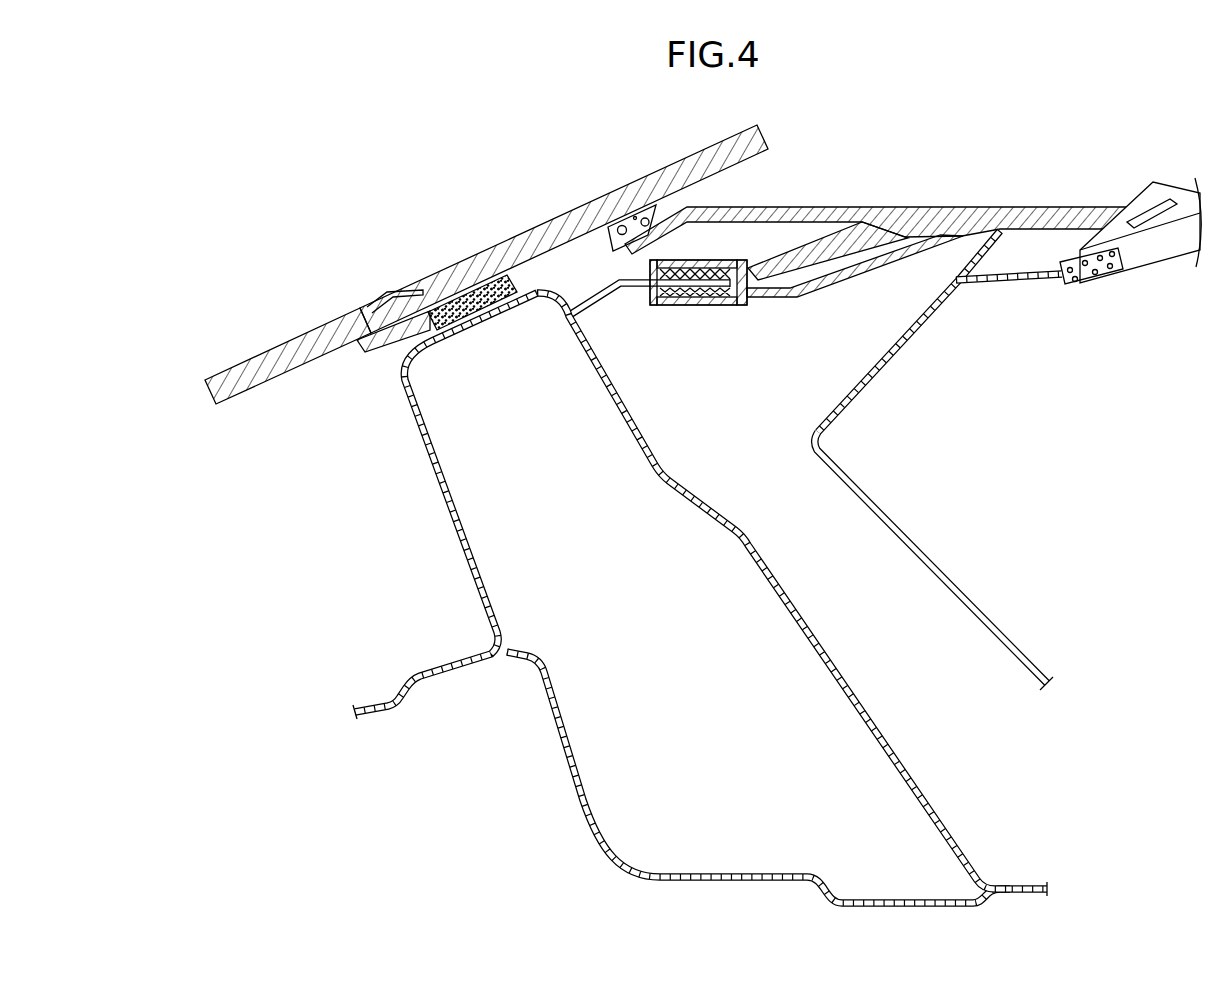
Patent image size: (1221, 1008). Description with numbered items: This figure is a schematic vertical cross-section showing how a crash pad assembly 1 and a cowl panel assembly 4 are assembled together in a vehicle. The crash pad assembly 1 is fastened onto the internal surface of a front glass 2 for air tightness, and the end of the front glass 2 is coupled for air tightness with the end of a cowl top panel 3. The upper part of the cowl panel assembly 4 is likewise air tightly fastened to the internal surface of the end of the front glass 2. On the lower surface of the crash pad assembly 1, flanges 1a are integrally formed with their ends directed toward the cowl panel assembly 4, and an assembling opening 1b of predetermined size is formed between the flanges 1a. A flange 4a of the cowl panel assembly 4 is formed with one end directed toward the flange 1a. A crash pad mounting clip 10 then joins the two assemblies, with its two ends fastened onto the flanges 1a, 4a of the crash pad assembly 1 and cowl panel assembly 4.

The crash pad assembly 1 is at (920, 207).
The flange 1a is at (841, 258).
The assembling opening 1b is at (810, 268).
The front glass 2 is at (595, 208).
The cowl top panel 3 is at (248, 360).
The cowl panel assembly 4 is at (433, 478).
The flange 4a is at (608, 301).
The crash pad mounting clip 10 is at (704, 306).